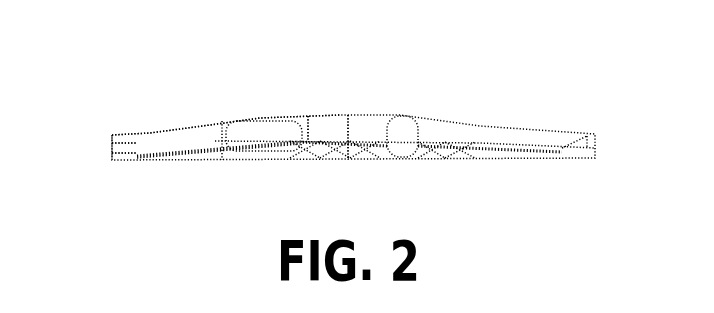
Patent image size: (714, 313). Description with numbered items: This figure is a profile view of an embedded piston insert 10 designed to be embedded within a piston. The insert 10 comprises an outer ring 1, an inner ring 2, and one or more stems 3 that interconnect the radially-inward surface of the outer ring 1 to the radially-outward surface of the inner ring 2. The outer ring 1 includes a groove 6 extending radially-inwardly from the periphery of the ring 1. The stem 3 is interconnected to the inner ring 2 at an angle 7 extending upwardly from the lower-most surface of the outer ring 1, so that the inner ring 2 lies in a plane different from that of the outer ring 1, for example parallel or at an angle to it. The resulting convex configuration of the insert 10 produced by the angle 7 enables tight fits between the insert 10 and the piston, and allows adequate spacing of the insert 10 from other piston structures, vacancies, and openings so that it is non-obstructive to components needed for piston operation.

The embedded piston insert 10 is at (437, 77).
The outer ring 1 is at (127, 126).
The inner ring 2 is at (328, 137).
The stem 3 is at (207, 158).
The groove 6 is at (104, 147).
The angle 7 is at (231, 153).